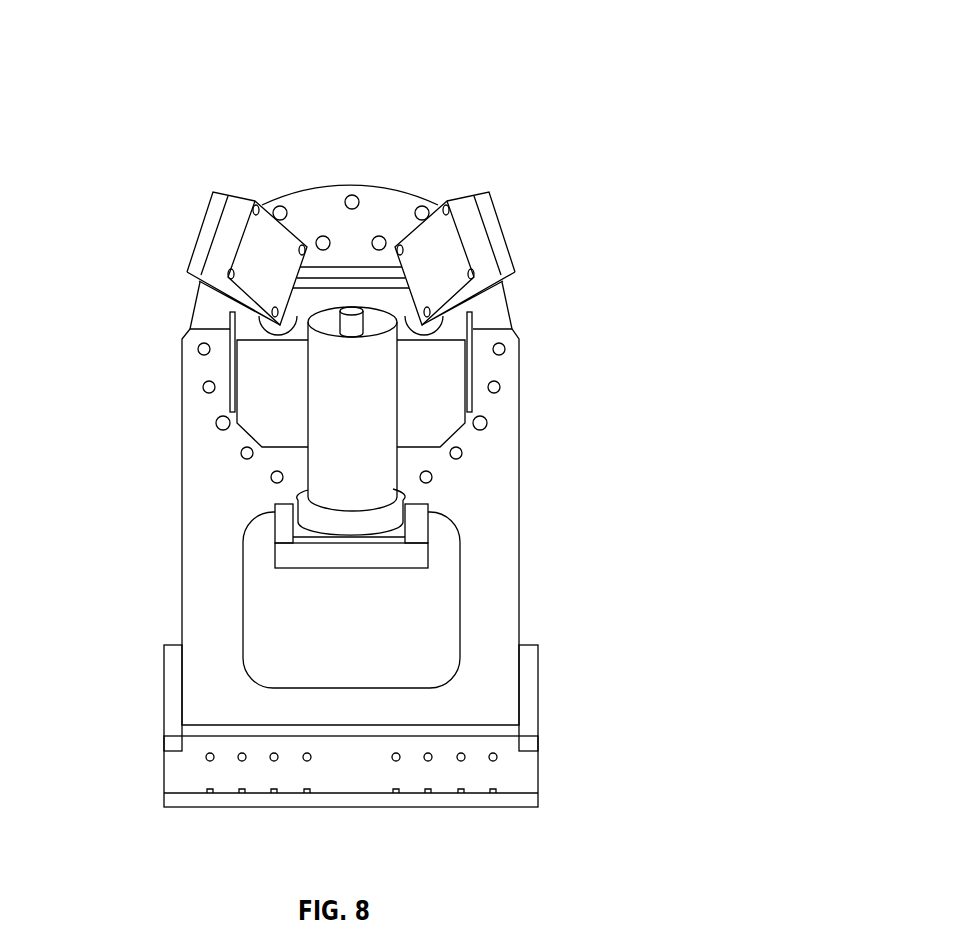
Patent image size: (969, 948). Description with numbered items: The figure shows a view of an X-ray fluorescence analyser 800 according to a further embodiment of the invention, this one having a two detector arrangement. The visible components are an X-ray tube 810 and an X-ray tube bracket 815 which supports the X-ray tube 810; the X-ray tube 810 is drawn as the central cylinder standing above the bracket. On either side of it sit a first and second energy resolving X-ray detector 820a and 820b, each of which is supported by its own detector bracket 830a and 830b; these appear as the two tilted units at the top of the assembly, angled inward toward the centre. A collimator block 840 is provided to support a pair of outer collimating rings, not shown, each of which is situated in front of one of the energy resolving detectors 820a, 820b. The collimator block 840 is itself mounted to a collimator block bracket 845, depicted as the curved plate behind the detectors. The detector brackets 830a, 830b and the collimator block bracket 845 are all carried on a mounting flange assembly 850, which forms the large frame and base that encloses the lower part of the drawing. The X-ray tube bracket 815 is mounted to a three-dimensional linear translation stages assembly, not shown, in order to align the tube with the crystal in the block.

The X-ray fluorescence analyser 800 is at (560, 74).
The collimator block bracket 845 is at (349, 160).
The first energy resolving X-ray detector 820a is at (266, 197).
The second energy resolving X-ray detector 820b is at (431, 189).
The detector bracket 830a is at (195, 228).
The detector bracket 830b is at (510, 228).
The mounting flange assembly 850 is at (522, 332).
The collimator block 840 is at (253, 400).
The X-ray tube 810 is at (372, 436).
The X-ray tube bracket 815 is at (383, 520).